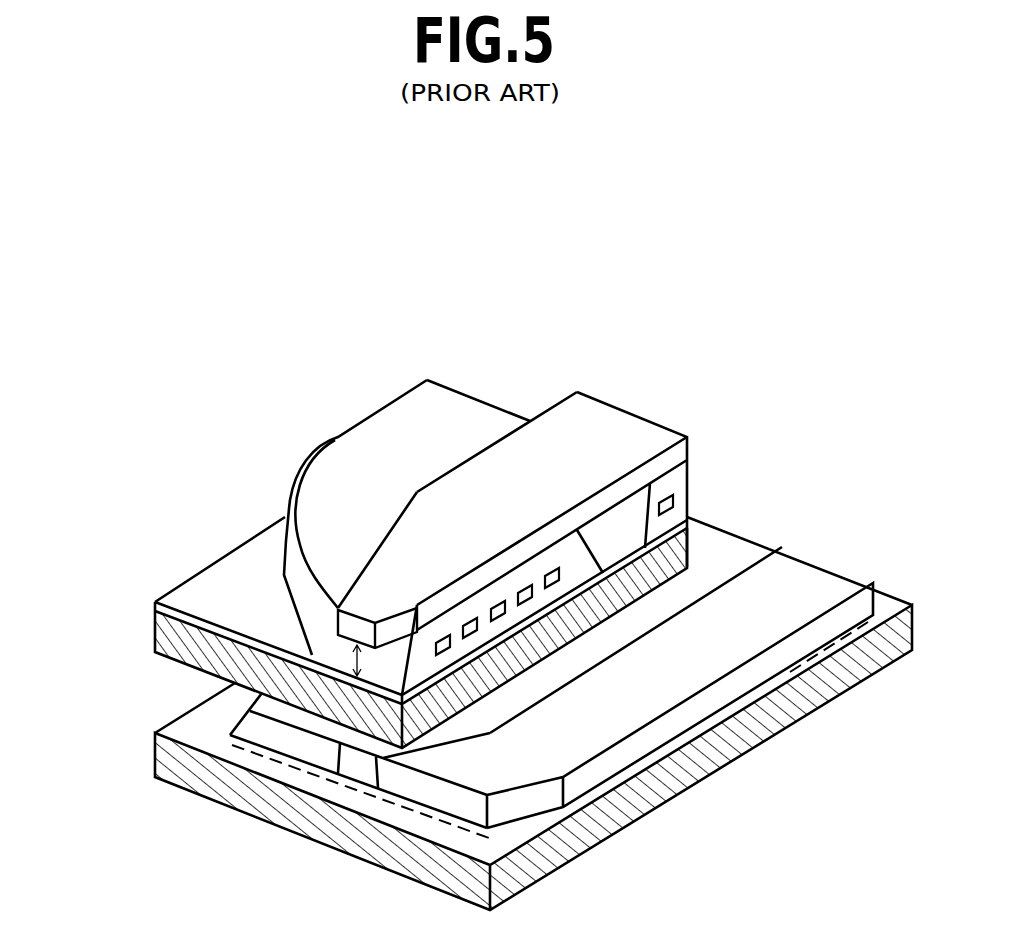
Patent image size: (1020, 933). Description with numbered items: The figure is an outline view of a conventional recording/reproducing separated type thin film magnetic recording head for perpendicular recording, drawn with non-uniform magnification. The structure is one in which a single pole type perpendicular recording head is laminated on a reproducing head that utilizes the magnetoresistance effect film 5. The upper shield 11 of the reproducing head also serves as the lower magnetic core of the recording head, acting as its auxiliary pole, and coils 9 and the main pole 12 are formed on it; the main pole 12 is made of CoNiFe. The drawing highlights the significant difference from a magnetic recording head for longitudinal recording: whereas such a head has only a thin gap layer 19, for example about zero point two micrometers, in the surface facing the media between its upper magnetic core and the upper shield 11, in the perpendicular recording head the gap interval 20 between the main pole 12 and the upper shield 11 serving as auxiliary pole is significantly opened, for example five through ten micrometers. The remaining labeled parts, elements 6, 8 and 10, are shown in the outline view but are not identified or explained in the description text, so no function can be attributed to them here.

The magnetoresistance effect film 5 is at (350, 777).
The heat sink block 6 is at (437, 790).
The lens 8 is at (354, 463).
The coils 9 is at (525, 595).
The base 10 is at (616, 840).
The upper shield 11 is at (155, 642).
The main pole 12 is at (634, 446).
The gap layer 19 is at (198, 598).
The gap interval 20 is at (352, 662).